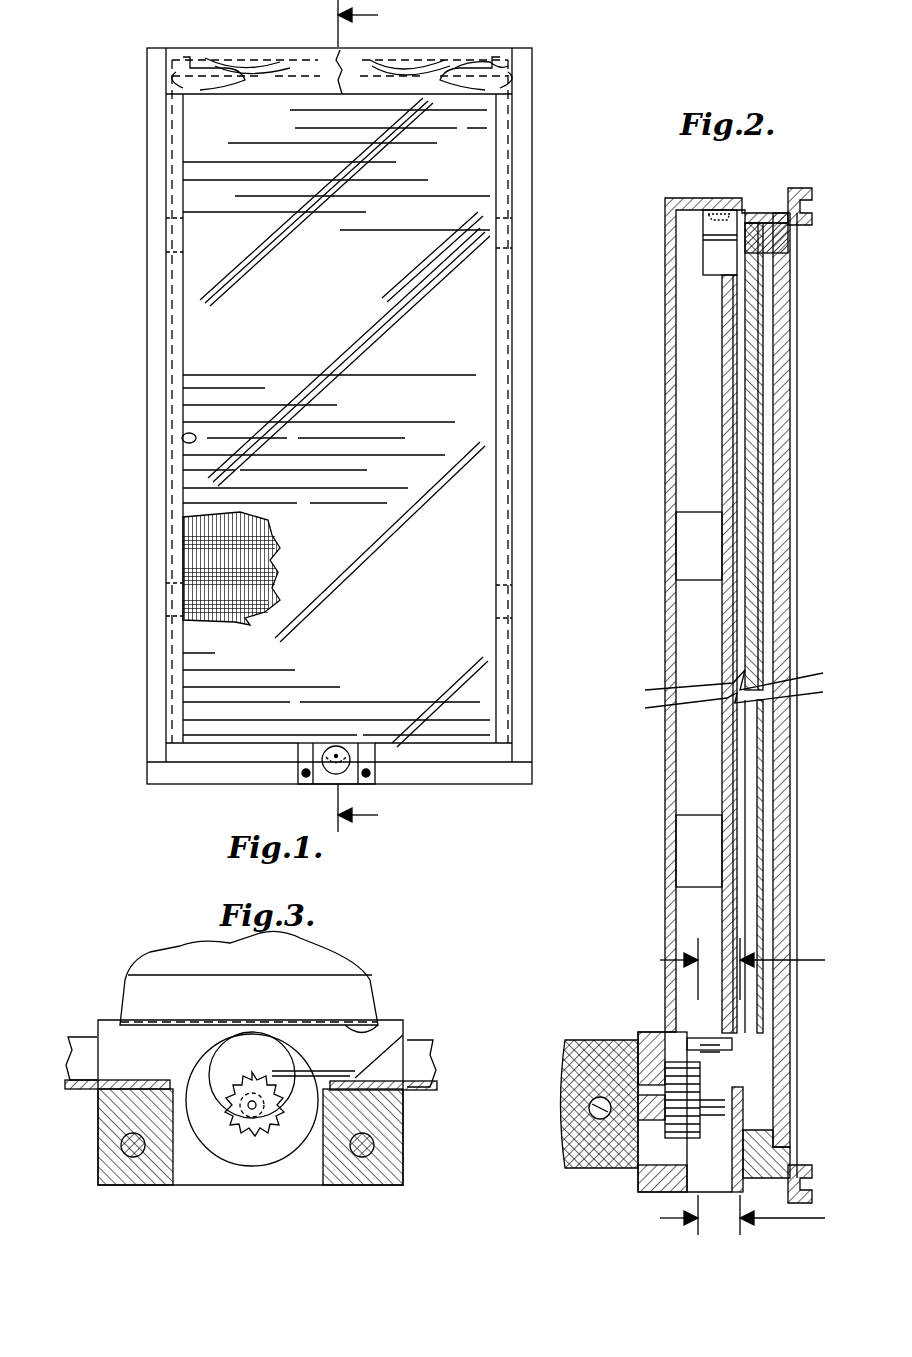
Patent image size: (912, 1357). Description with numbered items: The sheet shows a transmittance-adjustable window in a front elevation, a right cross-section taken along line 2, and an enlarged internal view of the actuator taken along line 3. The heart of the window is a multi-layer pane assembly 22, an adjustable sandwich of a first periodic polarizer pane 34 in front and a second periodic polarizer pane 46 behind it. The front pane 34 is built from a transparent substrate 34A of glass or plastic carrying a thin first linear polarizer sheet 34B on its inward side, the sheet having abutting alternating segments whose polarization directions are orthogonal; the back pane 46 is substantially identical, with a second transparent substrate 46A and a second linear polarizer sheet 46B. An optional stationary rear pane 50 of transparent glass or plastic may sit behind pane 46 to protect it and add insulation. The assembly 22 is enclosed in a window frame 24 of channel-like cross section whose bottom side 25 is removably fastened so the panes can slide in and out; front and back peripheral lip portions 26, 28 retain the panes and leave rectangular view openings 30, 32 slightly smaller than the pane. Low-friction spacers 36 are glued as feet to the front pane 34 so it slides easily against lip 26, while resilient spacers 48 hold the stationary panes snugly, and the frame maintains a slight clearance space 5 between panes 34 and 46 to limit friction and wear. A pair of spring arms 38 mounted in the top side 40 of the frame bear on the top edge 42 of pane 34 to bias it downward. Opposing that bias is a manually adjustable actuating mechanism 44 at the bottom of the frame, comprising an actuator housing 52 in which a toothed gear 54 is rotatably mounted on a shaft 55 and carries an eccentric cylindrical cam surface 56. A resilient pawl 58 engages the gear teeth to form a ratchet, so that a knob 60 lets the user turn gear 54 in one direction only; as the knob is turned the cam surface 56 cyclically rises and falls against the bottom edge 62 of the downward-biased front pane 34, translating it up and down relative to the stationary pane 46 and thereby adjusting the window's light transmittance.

In FIG. 1, the multi-layer pane assembly 22 is at (225, 308).
In FIG. 2, the multi-layer pane assembly 22 is at (715, 660).
In FIG. 1, the window frame 24 is at (147, 360).
In FIG. 1, the bottom side 25 is at (150, 775).
In FIG. 1, the front peripheral lip portion 26 is at (170, 140).
In FIG. 2, the front peripheral lip portion 26 is at (668, 275).
In FIG. 2, the back peripheral lip portion 28 is at (790, 323).
In FIG. 1, the front view opening 30 is at (182, 438).
In FIG. 2, the front view opening 30 is at (668, 335).
In FIG. 2, the rear view opening 32 is at (790, 350).
In FIG. 1, the first periodic polarizer pane 34 is at (132, 660).
In FIG. 2, the first periodic polarizer pane 34 is at (715, 448).
In FIG. 3, the first periodic polarizer pane 34 is at (345, 995).
In FIG. 2, the transparent substrate 34A is at (722, 485).
In FIG. 2, the first linear polarizer sheet 34B is at (730, 533).
In FIG. 1, the spacers 36 is at (172, 238).
In FIG. 2, the spacers 36 is at (695, 567).
In FIG. 1, the spring arms 38 is at (166, 85).
In FIG. 2, the spring arms 38 is at (712, 250).
In FIG. 1, the top side 40 is at (247, 47).
In FIG. 2, the top side 40 is at (720, 198).
In FIG. 1, the top edge 42 is at (497, 95).
In FIG. 2, the top edge 42 is at (705, 275).
In FIG. 1, the manually adjustable actuating mechanism 44 is at (290, 785).
In FIG. 2, the manually adjustable actuating mechanism 44 is at (555, 1097).
In FIG. 3, the manually adjustable actuating mechanism 44 is at (228, 1187).
In FIG. 2, the second periodic polarizer pane 46 is at (768, 477).
In FIG. 2, the second transparent substrate 46A is at (748, 563).
In FIG. 2, the second linear polarizer sheet 46B is at (760, 648).
In FIG. 2, the resilient spacers 48 is at (795, 235).
In FIG. 2, the stationary rear pane 50 is at (780, 745).
In FIG. 2, the actuator housing 52 is at (640, 1040).
In FIG. 3, the actuator housing 52 is at (310, 1168).
In FIG. 2, the toothed gear 54 is at (640, 1178).
In FIG. 3, the toothed gear 54 is at (268, 1130).
In FIG. 2, the shaft 55 is at (605, 1058).
In FIG. 3, the shaft 55 is at (245, 1105).
In FIG. 2, the eccentric cylindrical cam surface 56 is at (680, 1120).
In FIG. 3, the resilient pawl 58 is at (355, 1075).
In FIG. 2, the knob 60 is at (560, 1125).
In FIG. 2, the bottom edge 62 is at (690, 1050).
In FIG. 3, the bottom edge 62 is at (378, 1030).
In FIG. 1, the section line 2— 2 is at (367, 416).
In FIG. 2, the section line 3— 3 is at (792, 1086).
In FIG. 2, the clearance space 5 is at (669, 1086).